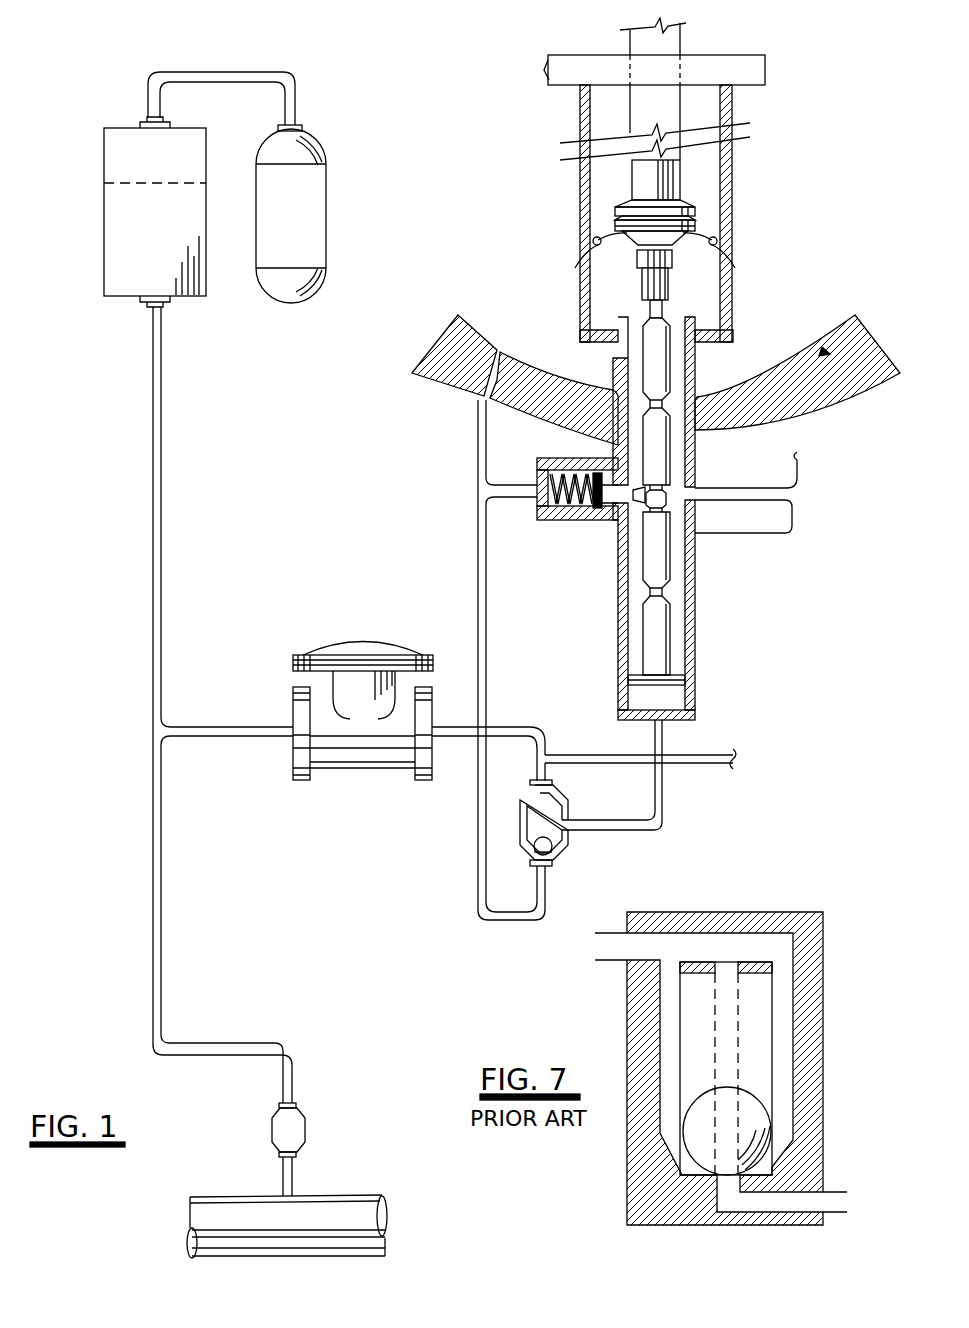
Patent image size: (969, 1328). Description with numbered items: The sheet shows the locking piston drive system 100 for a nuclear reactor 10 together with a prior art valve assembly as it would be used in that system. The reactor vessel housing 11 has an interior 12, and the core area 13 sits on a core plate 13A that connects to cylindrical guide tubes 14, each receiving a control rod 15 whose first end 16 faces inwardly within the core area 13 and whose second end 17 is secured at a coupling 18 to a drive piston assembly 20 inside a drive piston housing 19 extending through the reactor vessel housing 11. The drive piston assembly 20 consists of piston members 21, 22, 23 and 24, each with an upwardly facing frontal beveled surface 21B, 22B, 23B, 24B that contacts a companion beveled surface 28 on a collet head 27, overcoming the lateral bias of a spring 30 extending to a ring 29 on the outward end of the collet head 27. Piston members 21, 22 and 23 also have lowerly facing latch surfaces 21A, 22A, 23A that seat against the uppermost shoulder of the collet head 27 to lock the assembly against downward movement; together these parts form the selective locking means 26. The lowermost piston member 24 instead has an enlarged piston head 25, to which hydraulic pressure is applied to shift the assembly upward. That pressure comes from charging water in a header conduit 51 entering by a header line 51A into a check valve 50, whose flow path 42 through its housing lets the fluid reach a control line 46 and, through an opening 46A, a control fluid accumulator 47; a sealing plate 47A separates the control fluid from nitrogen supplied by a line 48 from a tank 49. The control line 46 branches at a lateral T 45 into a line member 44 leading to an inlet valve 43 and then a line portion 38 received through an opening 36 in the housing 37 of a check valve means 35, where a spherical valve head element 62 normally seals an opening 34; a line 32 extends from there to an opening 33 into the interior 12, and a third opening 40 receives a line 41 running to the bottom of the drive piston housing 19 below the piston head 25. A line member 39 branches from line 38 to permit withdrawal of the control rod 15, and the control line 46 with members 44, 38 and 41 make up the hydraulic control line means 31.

In FIG. 1, the nuclear reactor 10 is at (522, 228).
In FIG. 1, the locking piston drive system 100 is at (577, 287).
In FIG. 1, the reactor vessel housing 11 is at (453, 360).
In FIG. 1, the interior 12 is at (507, 368).
In FIG. 1, the core area 13 is at (628, 50).
In FIG. 1, the core plate 13A is at (740, 70).
In FIG. 1, the guide tube 14 is at (745, 120).
In FIG. 1, the control rod 15 is at (632, 202).
In FIG. 1, the first end 16 is at (632, 158).
In FIG. 1, the second end 17 is at (673, 262).
In FIG. 1, the coupling 18 is at (668, 302).
In FIG. 1, the drive piston housing 19 is at (690, 586).
In FIG. 1, the drive piston assembly 20 is at (682, 450).
In FIG. 1, the piston member 21 is at (657, 368).
In FIG. 1, the latch surface 21A is at (712, 343).
In FIG. 1, the frontal beveled surface 21B is at (643, 326).
In FIG. 1, the piston member 22 is at (665, 427).
In FIG. 1, the latch surface 22A is at (680, 493).
In FIG. 1, the frontal beveled surface 22B is at (647, 412).
In FIG. 1, the piston member 23 is at (652, 557).
In FIG. 1, the latch surface 23A is at (667, 590).
In FIG. 1, the frontal beveled surface 23B is at (647, 513).
In FIG. 1, the lowermost piston member 24 is at (653, 655).
In FIG. 1, the frontal beveled surface 24B is at (648, 601).
In FIG. 1, the piston head 25 is at (682, 682).
In FIG. 1, the selective locking means 26 is at (527, 527).
In FIG. 1, the collet head 27 is at (633, 490).
In FIG. 1, the beveled surface 28 is at (667, 505).
In FIG. 1, the ring 29 is at (537, 463).
In FIG. 1, the spring 30 is at (593, 482).
In FIG. 1, the hydraulic control line means 31 is at (467, 854).
In FIG. 1, the line 32 is at (477, 468).
In FIG. 1, the opening 33 is at (460, 380).
In FIG. 1, the opening 34 is at (547, 868).
In FIG. 1, the check valve means 35 is at (598, 857).
In FIG. 1, the opening 36 is at (527, 795).
In FIG. 1, the housing 37 is at (563, 798).
In FIG. 1, the line portion 38 is at (543, 733).
In FIG. 1, the line member 39 is at (697, 767).
In FIG. 1, the third opening 40 is at (562, 825).
In FIG. 1, the line 41 is at (663, 743).
In FIG. 7, the flow path 42 is at (755, 1036).
In FIG. 1, the inlet valve 43 is at (365, 643).
In FIG. 1, the line member 44 is at (242, 727).
In FIG. 1, the lateral T 45 is at (148, 740).
In FIG. 1, the control line 46 is at (152, 360).
In FIG. 1, the opening 46A is at (291, 1103).
In FIG. 7, the opening 46A is at (605, 934).
In FIG. 1, the control fluid accumulator 47 is at (105, 196).
In FIG. 1, the sealing plate 47A is at (147, 182).
In FIG. 1, the line 48 is at (175, 72).
In FIG. 1, the tank 49 is at (312, 135).
In FIG. 1, the check valve 50 is at (283, 1125).
In FIG. 1, the header conduit 51 is at (230, 1196).
In FIG. 1, the header line 51A is at (292, 1185).
In FIG. 7, the header line 51A is at (837, 1192).
In FIG. 1, the spherical valve head element 62 is at (540, 848).